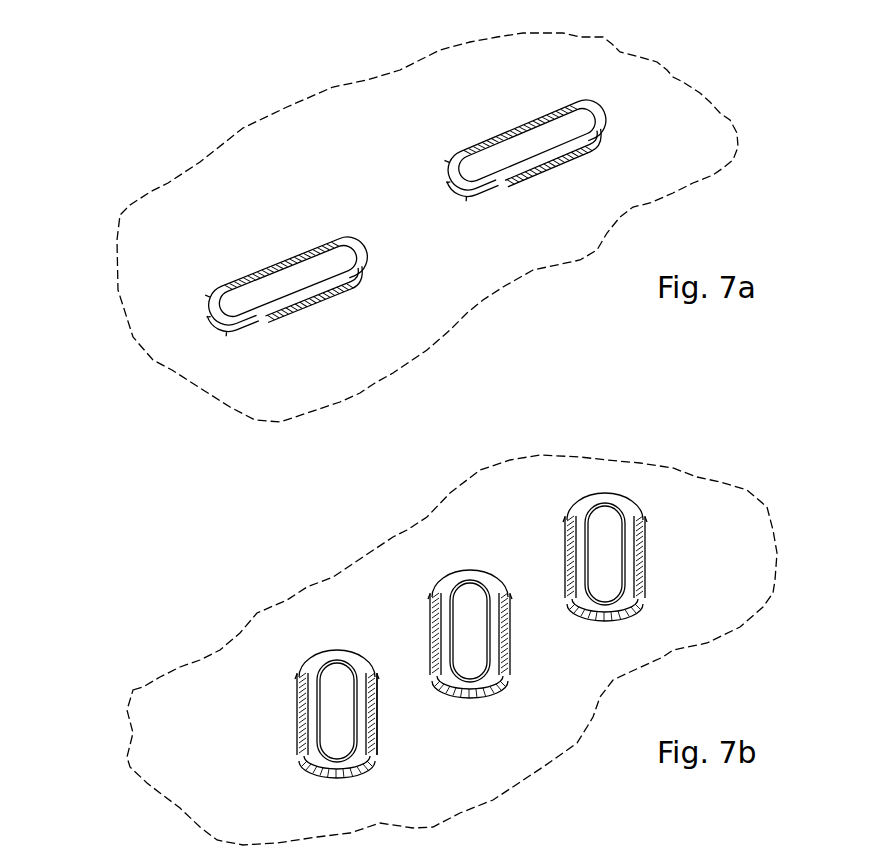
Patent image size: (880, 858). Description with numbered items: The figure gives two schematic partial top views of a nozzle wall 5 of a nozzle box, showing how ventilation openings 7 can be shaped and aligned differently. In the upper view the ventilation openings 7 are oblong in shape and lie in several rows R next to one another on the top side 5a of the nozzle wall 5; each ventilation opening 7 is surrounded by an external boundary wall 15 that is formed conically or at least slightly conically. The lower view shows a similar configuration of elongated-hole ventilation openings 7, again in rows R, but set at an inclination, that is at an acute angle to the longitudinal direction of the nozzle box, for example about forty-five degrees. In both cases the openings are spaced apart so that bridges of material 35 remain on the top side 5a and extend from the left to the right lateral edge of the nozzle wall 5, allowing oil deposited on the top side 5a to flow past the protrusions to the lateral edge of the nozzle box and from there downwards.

In FIG. 7A, the nozzle wall 5 is at (427, 212).
In FIG. 7B, the nozzle wall 5 is at (466, 613).
In FIG. 7A, the top side of the nozzle wall 5a is at (357, 123).
In FIG. 7B, the top side of the nozzle wall 5a is at (710, 505).
In FIG. 7A, the ventilation opening 7 is at (278, 283).
In FIG. 7B, the ventilation opening 7 is at (331, 697).
In FIG. 7A, the external boundary wall 15 is at (570, 150).
In FIG. 7B, the external boundary wall 15 is at (380, 730).
In FIG. 7A, the bridge of material 35 is at (240, 228).
In FIG. 7B, the bridge of material 35 is at (540, 570).
In FIG. 7A, the row R is at (197, 333).
In FIG. 7B, the row R is at (250, 755).